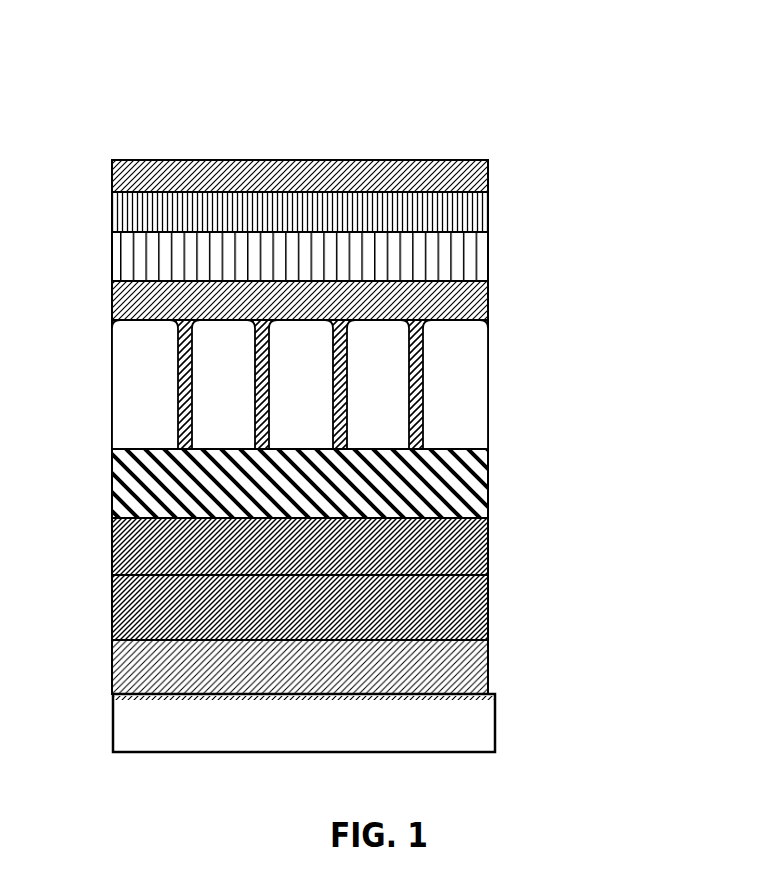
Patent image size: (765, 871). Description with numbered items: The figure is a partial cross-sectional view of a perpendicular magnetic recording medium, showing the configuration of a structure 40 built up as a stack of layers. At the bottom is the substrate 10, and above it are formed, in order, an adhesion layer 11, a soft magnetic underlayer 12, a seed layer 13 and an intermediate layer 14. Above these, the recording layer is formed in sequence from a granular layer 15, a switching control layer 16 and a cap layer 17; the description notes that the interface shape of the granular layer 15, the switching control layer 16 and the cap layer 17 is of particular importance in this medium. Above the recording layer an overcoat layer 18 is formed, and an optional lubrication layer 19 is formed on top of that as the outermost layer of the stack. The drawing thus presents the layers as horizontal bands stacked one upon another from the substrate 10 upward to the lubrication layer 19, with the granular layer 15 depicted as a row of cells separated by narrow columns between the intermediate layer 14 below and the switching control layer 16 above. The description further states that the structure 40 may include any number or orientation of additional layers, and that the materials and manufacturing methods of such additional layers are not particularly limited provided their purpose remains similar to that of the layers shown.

The structure 40 is at (84, 74).
The lubrication layer 19 is at (437, 178).
The overcoat layer 18 is at (440, 210).
The cap layer 17 is at (433, 258).
The switching control layer 16 is at (423, 308).
The granular layer 15 is at (495, 322).
The intermediate layer 14 is at (450, 490).
The seed layer 13 is at (450, 548).
The soft magnetic underlayer 12 is at (450, 610).
The adhesion layer 11 is at (450, 673).
The substrate 10 is at (447, 720).